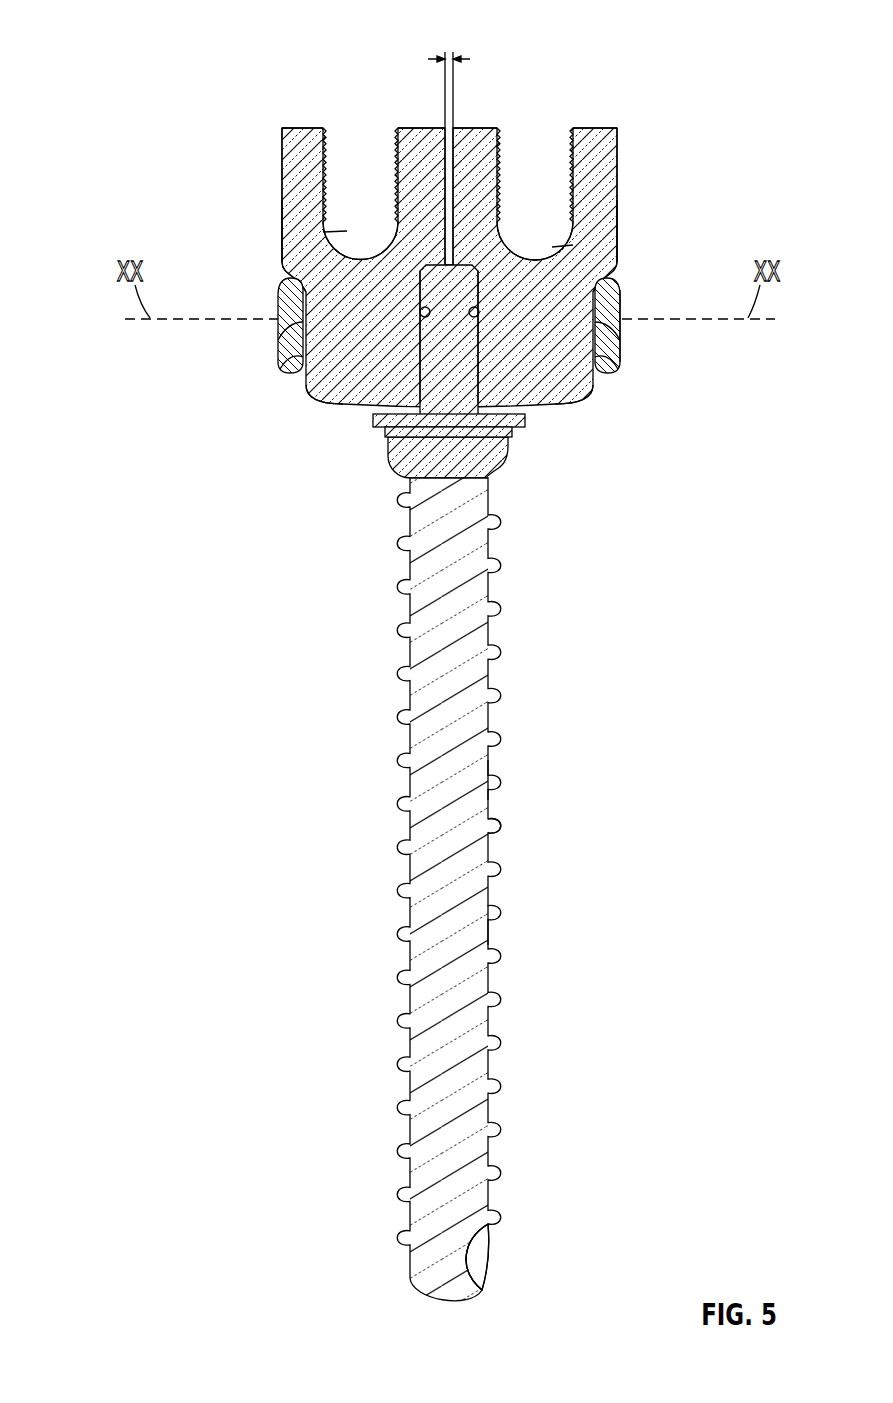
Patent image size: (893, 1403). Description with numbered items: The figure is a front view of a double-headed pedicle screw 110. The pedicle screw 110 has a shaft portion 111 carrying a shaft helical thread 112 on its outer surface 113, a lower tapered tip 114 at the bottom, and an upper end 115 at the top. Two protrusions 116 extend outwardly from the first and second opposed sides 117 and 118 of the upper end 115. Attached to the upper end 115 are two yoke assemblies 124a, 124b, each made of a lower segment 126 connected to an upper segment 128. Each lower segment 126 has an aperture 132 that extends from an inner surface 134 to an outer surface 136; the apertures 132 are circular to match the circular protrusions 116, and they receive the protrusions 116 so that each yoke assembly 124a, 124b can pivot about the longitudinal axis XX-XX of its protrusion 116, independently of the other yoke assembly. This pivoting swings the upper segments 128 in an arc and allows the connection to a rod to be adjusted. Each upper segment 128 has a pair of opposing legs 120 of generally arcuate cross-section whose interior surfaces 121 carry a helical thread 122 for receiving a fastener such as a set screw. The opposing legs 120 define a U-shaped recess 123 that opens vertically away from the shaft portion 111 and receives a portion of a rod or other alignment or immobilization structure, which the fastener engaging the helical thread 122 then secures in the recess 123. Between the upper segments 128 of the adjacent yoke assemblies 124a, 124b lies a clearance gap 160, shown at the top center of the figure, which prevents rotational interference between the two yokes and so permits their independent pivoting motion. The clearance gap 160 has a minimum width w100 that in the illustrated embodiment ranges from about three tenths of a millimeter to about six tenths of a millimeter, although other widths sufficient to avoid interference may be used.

The pedicle screw 110 is at (714, 63).
The shaft portion 111 is at (490, 788).
The shaft helical thread 112 is at (492, 823).
The outer surface 113 is at (488, 933).
The lower tapered tip 114 is at (483, 1291).
The upper end 115 is at (527, 423).
The protrusions 116 is at (622, 345).
The first side 117 is at (418, 354).
The second side 118 is at (480, 354).
The opposing legs 120 is at (291, 127).
The interior surfaces 121 is at (400, 133).
The helical thread 122 is at (400, 223).
The recess 123 is at (290, 263).
The yoke assembly 124a is at (282, 204).
The yoke assembly 124b is at (617, 156).
The lower segment 126 is at (336, 406).
The upper segment 128 is at (282, 242).
The apertures 132 is at (283, 365).
The inner surface 134 is at (420, 313).
The outer surface 136 is at (280, 333).
The clearance gap 160 is at (460, 152).
The minimum width w100 is at (440, 57).